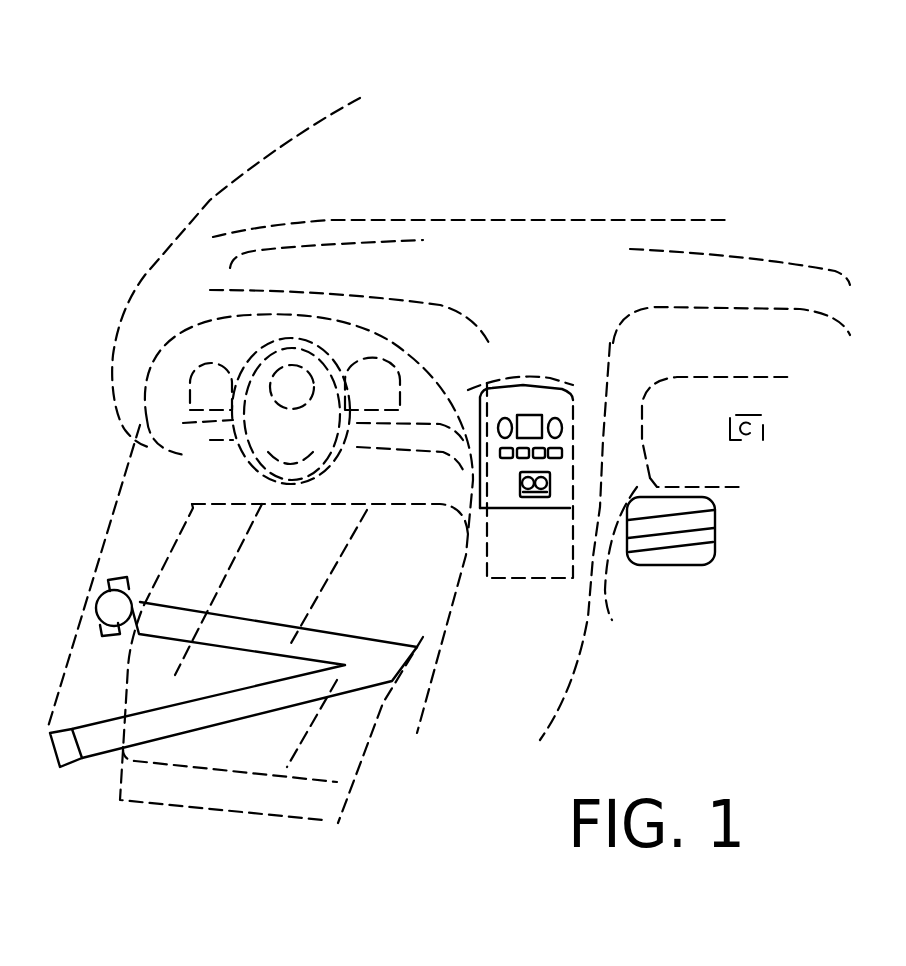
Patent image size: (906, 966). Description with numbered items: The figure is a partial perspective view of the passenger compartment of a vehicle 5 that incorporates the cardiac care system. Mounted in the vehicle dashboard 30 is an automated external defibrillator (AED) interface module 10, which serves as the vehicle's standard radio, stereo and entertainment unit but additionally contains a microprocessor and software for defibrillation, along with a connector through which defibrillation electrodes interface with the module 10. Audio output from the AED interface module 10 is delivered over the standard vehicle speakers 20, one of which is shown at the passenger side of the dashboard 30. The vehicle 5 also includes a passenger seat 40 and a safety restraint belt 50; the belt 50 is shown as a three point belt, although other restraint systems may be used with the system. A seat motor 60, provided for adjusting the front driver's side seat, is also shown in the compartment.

The vehicle 5 is at (426, 56).
The AED interface module 10 is at (528, 392).
The vehicle speakers 20 is at (673, 563).
The vehicle dashboard 30 is at (188, 278).
The passenger seat 40 is at (432, 570).
The safety restraint belt 50 is at (162, 720).
The seat motor 60 is at (95, 604).